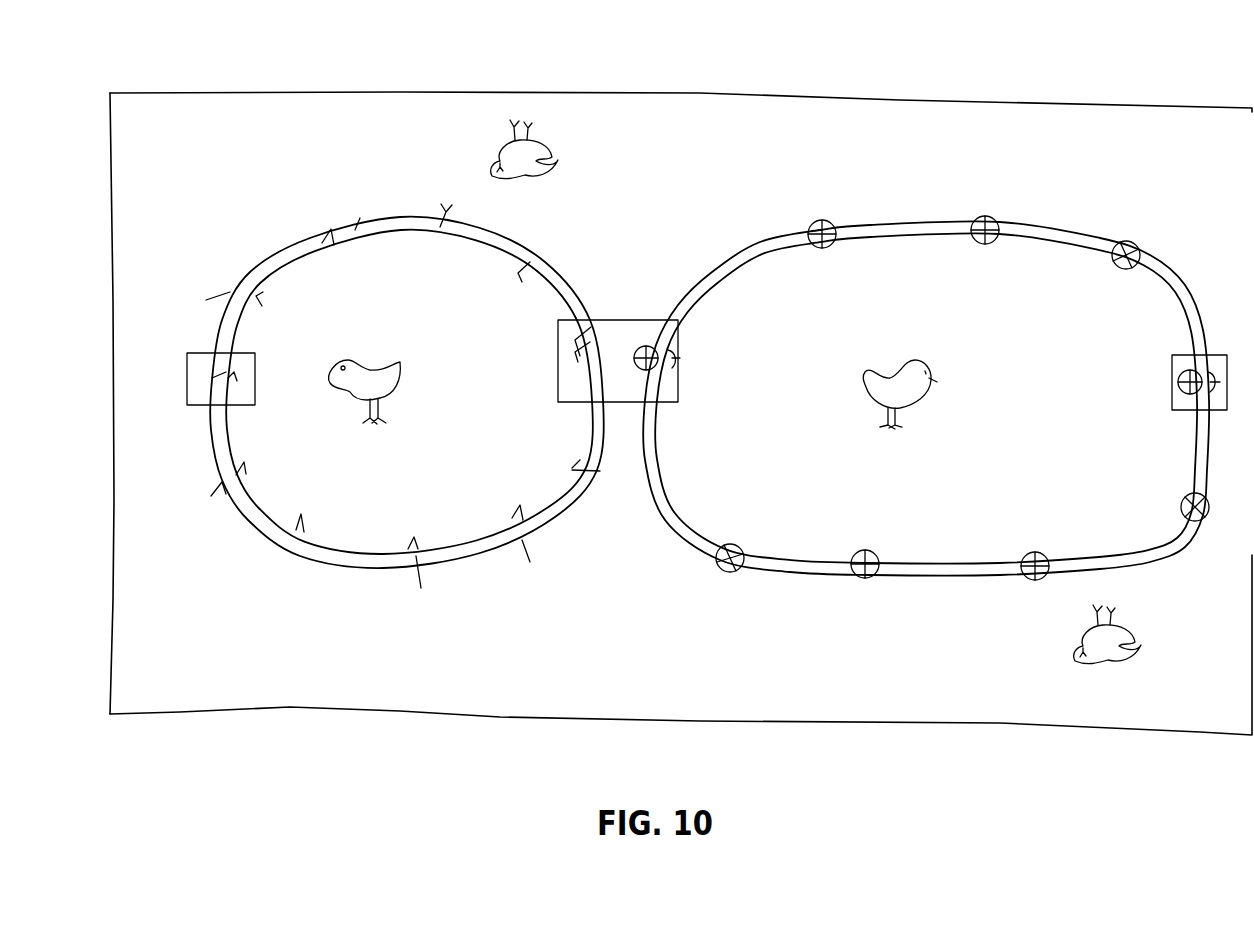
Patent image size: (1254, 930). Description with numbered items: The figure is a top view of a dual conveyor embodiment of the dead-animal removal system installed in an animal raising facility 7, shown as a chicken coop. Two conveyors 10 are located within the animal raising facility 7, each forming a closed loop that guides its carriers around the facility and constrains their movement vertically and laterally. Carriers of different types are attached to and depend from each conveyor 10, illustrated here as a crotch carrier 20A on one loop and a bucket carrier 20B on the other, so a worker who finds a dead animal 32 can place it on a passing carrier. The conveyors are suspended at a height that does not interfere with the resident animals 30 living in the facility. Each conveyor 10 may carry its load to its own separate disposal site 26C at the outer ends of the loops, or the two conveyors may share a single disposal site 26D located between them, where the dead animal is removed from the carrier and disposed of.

The animal raising facility 7 is at (128, 93).
The conveyor 10 is at (688, 373).
The crotch carrier 20A is at (322, 240).
The bucket carrier 20B is at (992, 212).
The separate disposal site 26C is at (188, 407).
The shared disposal site 26D is at (660, 262).
The resident animal 30 is at (930, 380).
The dead animal 32 is at (550, 157).